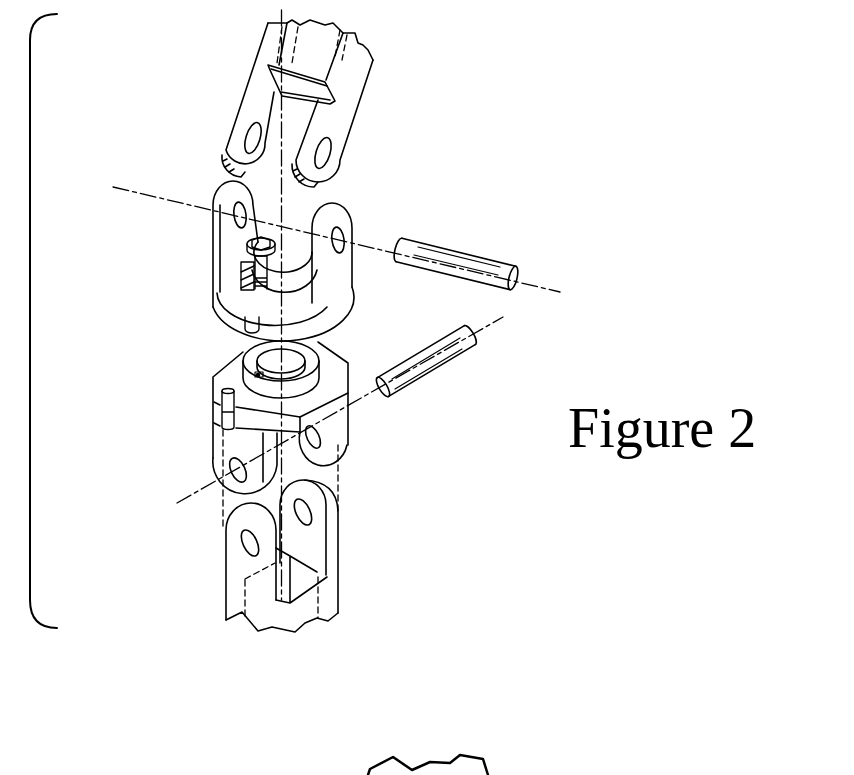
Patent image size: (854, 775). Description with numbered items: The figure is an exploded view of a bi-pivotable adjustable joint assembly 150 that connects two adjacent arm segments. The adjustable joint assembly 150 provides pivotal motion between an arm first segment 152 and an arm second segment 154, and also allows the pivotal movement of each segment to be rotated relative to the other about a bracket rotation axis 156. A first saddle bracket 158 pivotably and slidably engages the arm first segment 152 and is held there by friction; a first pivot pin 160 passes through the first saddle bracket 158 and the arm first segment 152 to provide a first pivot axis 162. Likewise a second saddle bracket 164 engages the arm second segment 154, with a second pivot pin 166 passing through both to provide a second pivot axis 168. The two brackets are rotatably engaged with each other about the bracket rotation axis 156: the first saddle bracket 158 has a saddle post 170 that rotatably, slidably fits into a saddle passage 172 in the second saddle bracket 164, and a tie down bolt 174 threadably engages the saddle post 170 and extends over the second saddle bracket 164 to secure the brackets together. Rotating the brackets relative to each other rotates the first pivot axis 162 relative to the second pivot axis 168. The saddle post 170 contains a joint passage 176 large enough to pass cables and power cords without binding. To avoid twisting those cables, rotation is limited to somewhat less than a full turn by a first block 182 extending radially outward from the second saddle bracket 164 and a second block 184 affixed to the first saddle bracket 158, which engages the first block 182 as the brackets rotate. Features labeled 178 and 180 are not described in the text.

The adjustable joint assembly 150 is at (620, 272).
The arm first segment 152 is at (338, 570).
The arm second segment 154 is at (358, 108).
The bracket rotation axis 156 is at (277, 137).
The first saddle bracket 158 is at (360, 432).
The first pivot pin 160 is at (422, 370).
The first pivot axis 162 is at (200, 492).
The second saddle bracket 164 is at (355, 230).
The second pivot pin 166 is at (490, 268).
The second pivot axis 168 is at (130, 188).
The saddle post 170 is at (320, 363).
The saddle passage 172 is at (252, 275).
The tie down bolt 174 is at (240, 262).
The joint passage 176 is at (292, 362).
The slot 178 is at (297, 575).
The cross pin 180 is at (305, 87).
The first block 182 is at (247, 321).
The second block 184 is at (226, 404).